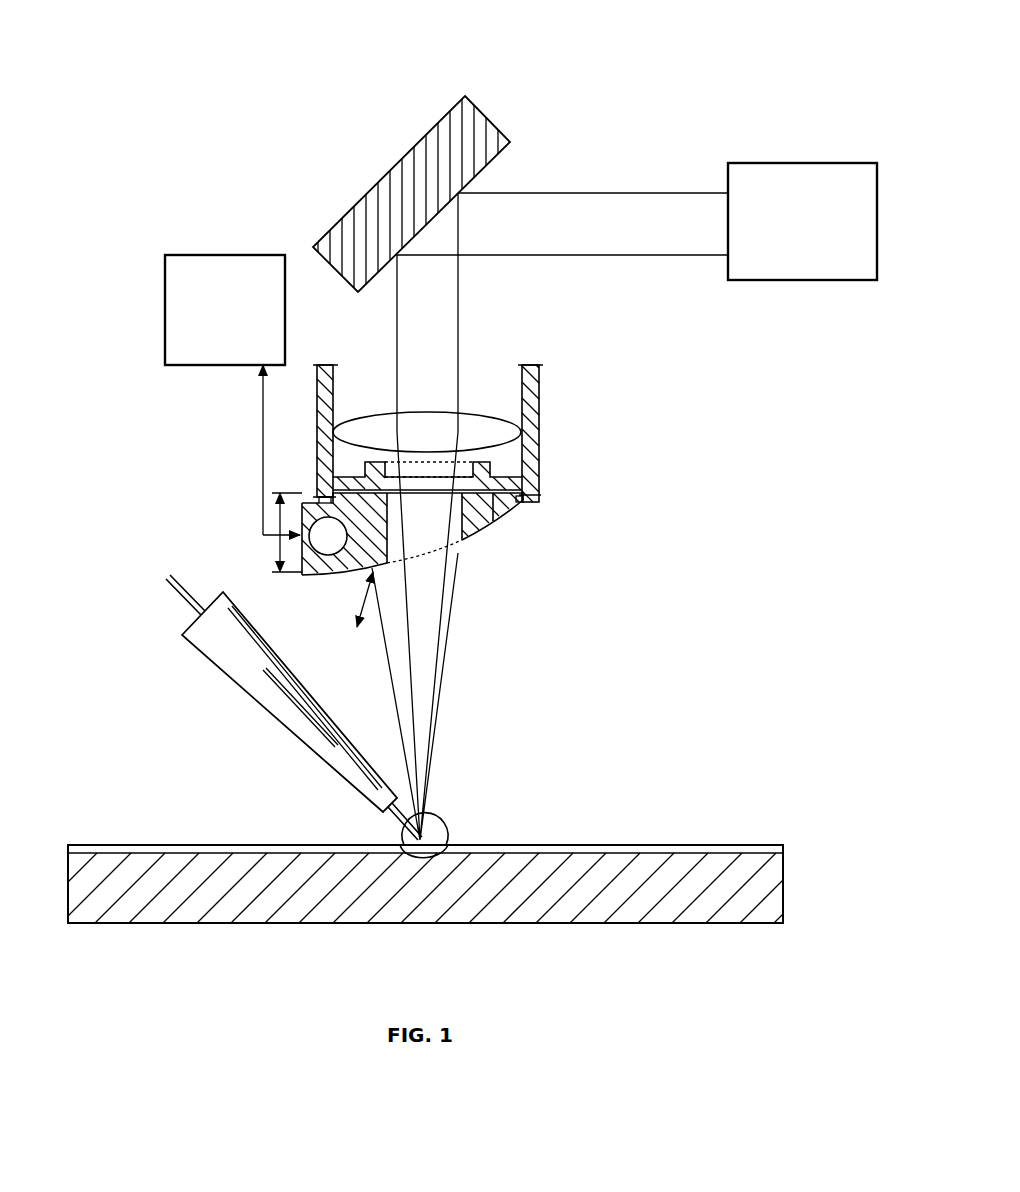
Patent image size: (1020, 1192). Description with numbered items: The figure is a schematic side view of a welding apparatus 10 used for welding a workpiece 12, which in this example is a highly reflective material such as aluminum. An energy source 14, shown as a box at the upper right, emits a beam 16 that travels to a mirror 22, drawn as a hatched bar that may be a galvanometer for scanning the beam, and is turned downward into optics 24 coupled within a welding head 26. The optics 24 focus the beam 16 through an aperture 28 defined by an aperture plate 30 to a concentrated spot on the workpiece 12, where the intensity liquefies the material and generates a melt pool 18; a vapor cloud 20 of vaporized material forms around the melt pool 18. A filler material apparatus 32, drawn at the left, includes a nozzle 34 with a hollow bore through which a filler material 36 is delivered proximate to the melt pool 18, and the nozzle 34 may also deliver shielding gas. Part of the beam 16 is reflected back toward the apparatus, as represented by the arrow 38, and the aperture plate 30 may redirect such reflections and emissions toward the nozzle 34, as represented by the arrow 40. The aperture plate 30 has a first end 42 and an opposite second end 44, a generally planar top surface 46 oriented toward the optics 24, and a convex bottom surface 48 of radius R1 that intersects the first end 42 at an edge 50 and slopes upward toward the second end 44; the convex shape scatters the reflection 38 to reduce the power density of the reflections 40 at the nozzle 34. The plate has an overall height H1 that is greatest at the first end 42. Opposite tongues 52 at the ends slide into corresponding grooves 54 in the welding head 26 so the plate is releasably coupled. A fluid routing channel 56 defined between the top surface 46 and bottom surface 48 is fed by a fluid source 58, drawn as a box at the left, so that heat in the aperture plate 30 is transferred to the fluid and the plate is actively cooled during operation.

The welding apparatus 10 is at (608, 88).
The workpiece 12 is at (785, 897).
The energy source 14 is at (802, 221).
The beam 16 is at (612, 193).
The melt pool 18 is at (448, 838).
The vapor cloud 20 is at (433, 818).
The mirror 22 is at (402, 158).
The optics 24 is at (473, 403).
The welding head 26 is at (539, 428).
The aperture 28 is at (458, 556).
The aperture plate 30 is at (510, 505).
The filler material apparatus 32 is at (128, 602).
The nozzle 34 is at (197, 655).
The filler material 36 is at (393, 823).
The beam reflection 38 is at (393, 687).
The beam reflection toward nozzle 40 is at (360, 615).
The first end 42 is at (300, 552).
The second end 44 is at (540, 513).
The top surface 46 is at (492, 500).
The bottom surface 48 is at (337, 575).
The edge 50 is at (302, 574).
The tongues 52 is at (326, 500).
The grooves 54 is at (326, 498).
The fluid routing channel 56 is at (325, 545).
The fluid source 58 is at (232, 395).
The overall height H1 is at (278, 522).
The radius R1 is at (480, 542).